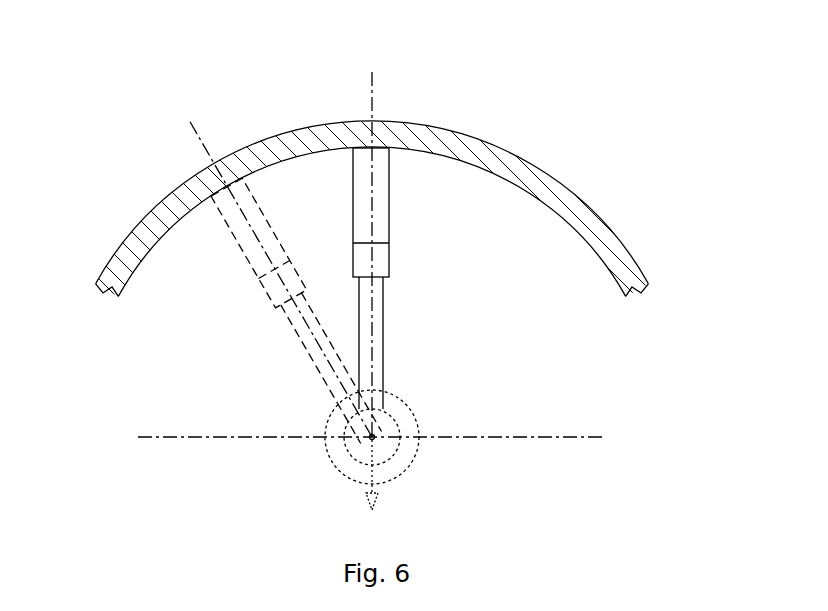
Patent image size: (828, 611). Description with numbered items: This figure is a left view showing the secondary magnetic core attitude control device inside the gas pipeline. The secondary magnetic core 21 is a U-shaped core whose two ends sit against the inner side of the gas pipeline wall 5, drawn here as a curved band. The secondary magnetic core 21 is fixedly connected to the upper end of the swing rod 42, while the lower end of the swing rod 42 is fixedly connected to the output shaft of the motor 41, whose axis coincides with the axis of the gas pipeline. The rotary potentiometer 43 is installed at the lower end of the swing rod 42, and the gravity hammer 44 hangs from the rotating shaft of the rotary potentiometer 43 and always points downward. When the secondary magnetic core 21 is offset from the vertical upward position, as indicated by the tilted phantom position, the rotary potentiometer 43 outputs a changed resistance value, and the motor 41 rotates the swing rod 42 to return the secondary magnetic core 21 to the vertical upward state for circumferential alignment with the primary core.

The gas pipeline wall 5 is at (478, 155).
The secondary magnetic core 21 is at (380, 190).
The motor 41 is at (403, 470).
The swing rod 42 is at (377, 345).
The rotary potentiometer 43 is at (370, 439).
The gravity hammer 44 is at (365, 500).